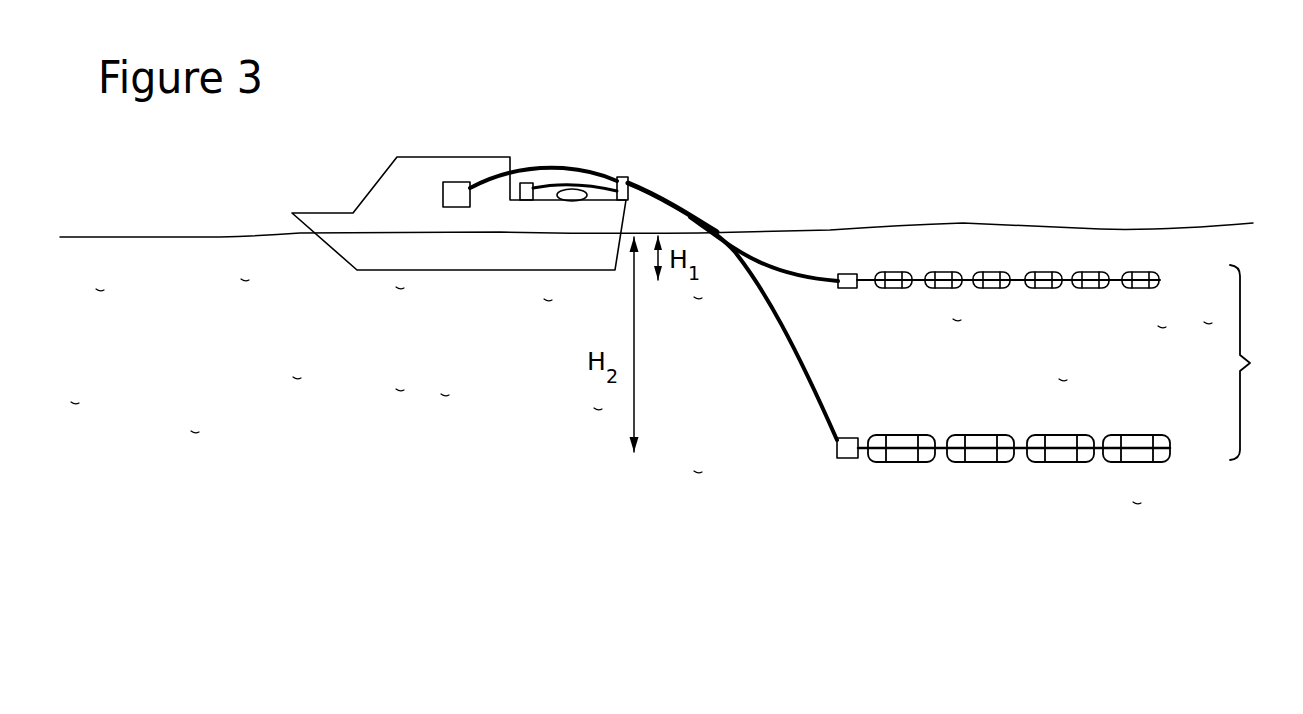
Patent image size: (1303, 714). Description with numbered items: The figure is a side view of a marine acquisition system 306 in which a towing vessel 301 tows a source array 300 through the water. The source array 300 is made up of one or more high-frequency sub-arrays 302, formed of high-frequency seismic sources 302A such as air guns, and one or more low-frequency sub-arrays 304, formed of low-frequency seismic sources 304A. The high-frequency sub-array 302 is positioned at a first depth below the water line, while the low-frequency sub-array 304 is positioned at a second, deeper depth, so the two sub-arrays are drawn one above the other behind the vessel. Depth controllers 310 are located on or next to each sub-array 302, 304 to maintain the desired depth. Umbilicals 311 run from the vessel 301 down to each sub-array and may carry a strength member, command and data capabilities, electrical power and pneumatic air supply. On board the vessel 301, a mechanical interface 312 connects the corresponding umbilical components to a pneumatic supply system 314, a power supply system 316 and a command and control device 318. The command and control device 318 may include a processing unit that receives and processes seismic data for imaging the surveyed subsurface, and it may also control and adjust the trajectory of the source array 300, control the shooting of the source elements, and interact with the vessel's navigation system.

The source array 300 is at (1264, 362).
The towing vessel 301 is at (360, 206).
The high-frequency sub-array 302 is at (1044, 226).
The high-frequency seismic source 302A is at (945, 272).
The low-frequency sub-array 304 is at (1038, 432).
The low-frequency seismic source 304A is at (983, 462).
The marine acquisition system 306 is at (915, 66).
The depth controller 310 is at (845, 273).
The umbilical 311 is at (795, 275).
The mechanical interface 312 is at (624, 178).
The pneumatic supply system 314 is at (572, 189).
The power supply system 316 is at (525, 183).
The command and control device 318 is at (453, 182).